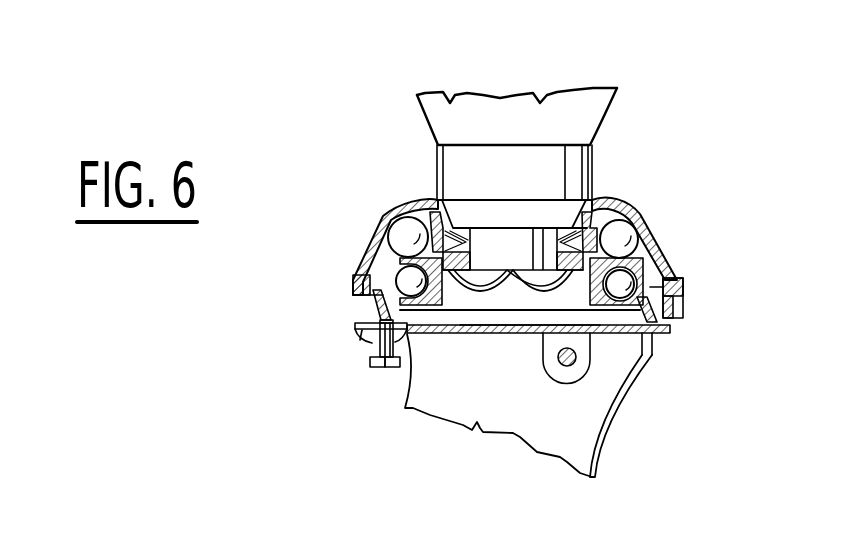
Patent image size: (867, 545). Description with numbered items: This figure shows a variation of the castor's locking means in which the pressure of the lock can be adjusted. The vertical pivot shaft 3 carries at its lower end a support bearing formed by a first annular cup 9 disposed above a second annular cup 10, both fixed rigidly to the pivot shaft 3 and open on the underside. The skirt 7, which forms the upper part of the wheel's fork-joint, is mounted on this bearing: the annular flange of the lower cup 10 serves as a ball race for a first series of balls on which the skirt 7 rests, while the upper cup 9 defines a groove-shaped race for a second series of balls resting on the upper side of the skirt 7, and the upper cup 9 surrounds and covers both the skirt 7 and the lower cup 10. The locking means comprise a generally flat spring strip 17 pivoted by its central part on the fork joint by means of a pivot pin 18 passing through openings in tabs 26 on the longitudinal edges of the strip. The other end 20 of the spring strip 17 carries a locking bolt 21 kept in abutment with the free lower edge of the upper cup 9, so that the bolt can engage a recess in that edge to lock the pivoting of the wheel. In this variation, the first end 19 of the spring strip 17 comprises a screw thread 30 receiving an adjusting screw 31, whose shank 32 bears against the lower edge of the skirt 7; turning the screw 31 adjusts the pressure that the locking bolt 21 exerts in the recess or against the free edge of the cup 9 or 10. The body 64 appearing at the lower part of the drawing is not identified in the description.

The vertical pivot shaft 3 is at (543, 150).
The skirt 7 is at (375, 285).
The first annular cup 9 is at (657, 227).
The second annular cup 10 is at (539, 327).
The spring strip 17 is at (450, 337).
The pivot pin 18 is at (577, 360).
The first end 19 is at (357, 333).
The other end 20 is at (672, 327).
The locking bolt 21 is at (683, 290).
The tabs 26 is at (553, 368).
The screw thread 30 is at (372, 340).
The adjusting screw 31 is at (390, 368).
The shank 32 is at (372, 318).
The wall 64 is at (605, 430).